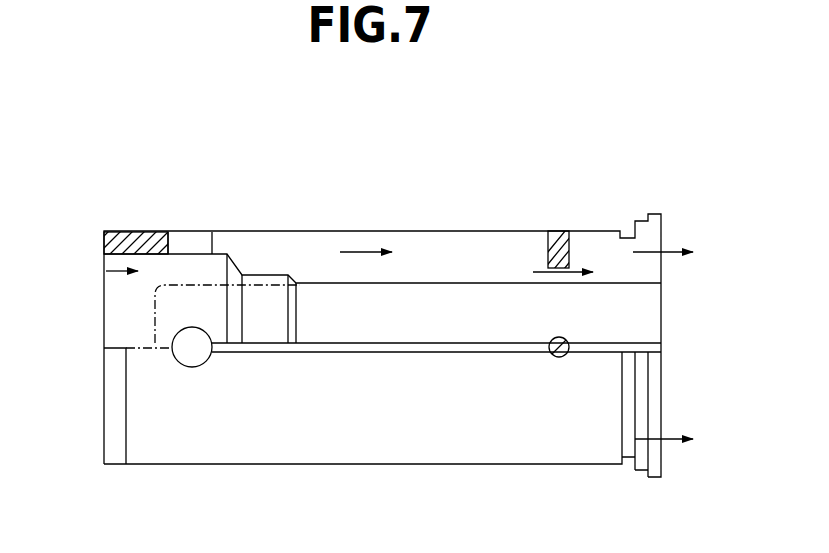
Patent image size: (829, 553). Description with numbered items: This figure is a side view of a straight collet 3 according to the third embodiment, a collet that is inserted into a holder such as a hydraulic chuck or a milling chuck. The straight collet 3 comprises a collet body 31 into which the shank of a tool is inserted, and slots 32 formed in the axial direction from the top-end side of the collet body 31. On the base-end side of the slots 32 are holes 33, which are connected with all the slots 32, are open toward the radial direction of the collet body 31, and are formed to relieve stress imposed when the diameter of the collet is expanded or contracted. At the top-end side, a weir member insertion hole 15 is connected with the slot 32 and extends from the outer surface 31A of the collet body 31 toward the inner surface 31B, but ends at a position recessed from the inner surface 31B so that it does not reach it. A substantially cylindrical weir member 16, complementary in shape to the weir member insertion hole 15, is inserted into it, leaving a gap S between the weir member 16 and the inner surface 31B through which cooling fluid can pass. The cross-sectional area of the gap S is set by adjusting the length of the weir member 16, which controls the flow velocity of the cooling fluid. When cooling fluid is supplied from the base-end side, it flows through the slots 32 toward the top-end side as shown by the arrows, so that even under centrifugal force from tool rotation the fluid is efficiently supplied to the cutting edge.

The straight collet 3 is at (657, 188).
The weir member insertion hole 15 is at (585, 230).
The weir member 16 is at (556, 230).
The collet body 31 is at (271, 432).
The outer surface 31A is at (405, 230).
The inner surface 31B is at (622, 284).
The slot 32 is at (285, 240).
The hole 33 is at (185, 240).
The gap S is at (540, 268).